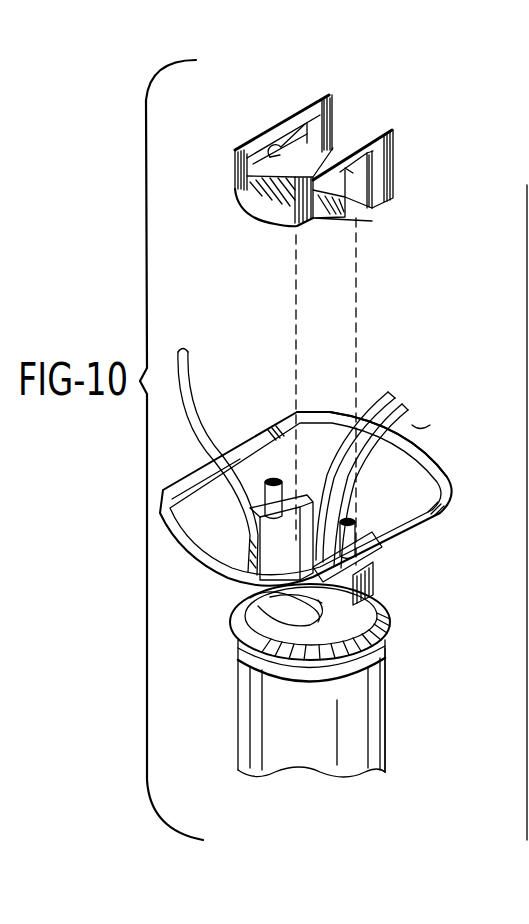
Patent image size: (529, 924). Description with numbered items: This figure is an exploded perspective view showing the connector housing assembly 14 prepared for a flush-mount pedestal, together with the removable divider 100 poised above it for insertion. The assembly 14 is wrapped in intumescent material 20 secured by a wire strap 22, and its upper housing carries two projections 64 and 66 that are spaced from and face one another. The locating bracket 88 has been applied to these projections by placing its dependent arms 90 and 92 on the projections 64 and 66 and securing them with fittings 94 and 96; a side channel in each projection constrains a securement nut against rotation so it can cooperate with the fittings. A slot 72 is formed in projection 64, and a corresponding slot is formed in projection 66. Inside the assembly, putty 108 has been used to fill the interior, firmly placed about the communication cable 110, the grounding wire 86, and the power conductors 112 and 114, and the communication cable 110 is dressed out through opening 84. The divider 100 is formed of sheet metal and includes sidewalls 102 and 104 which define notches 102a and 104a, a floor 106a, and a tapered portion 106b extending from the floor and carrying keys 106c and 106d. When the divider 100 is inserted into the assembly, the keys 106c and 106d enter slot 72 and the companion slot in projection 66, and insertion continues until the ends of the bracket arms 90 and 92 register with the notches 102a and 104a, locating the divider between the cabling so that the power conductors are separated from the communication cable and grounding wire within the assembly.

The divider 100 is at (357, 100).
The sidewall 102 is at (318, 115).
The notch 102a is at (258, 153).
The sidewall 104 is at (387, 143).
The notch 104a is at (345, 172).
The floor 106a is at (262, 206).
The tapered portion 106b is at (312, 226).
The key 106c is at (262, 178).
The key 106d is at (363, 223).
The communication cable 110 is at (188, 383).
The opening 84 is at (222, 573).
The locating bracket 88 is at (436, 459).
The fitting 94 is at (314, 435).
The projection 64 is at (240, 550).
The dependent arm 90 is at (250, 487).
The fitting 96 is at (350, 518).
The slot 72 is at (297, 540).
The power conductor 112 is at (378, 395).
The power conductor 114 is at (402, 403).
The grounding wire 86 is at (430, 425).
The dependent arm 92 is at (393, 565).
The projection 66 is at (385, 598).
The putty 108 is at (257, 617).
The wire strap 22 is at (314, 690).
The intumescent material 20 is at (330, 766).
The connector housing assembly 14 is at (402, 698).